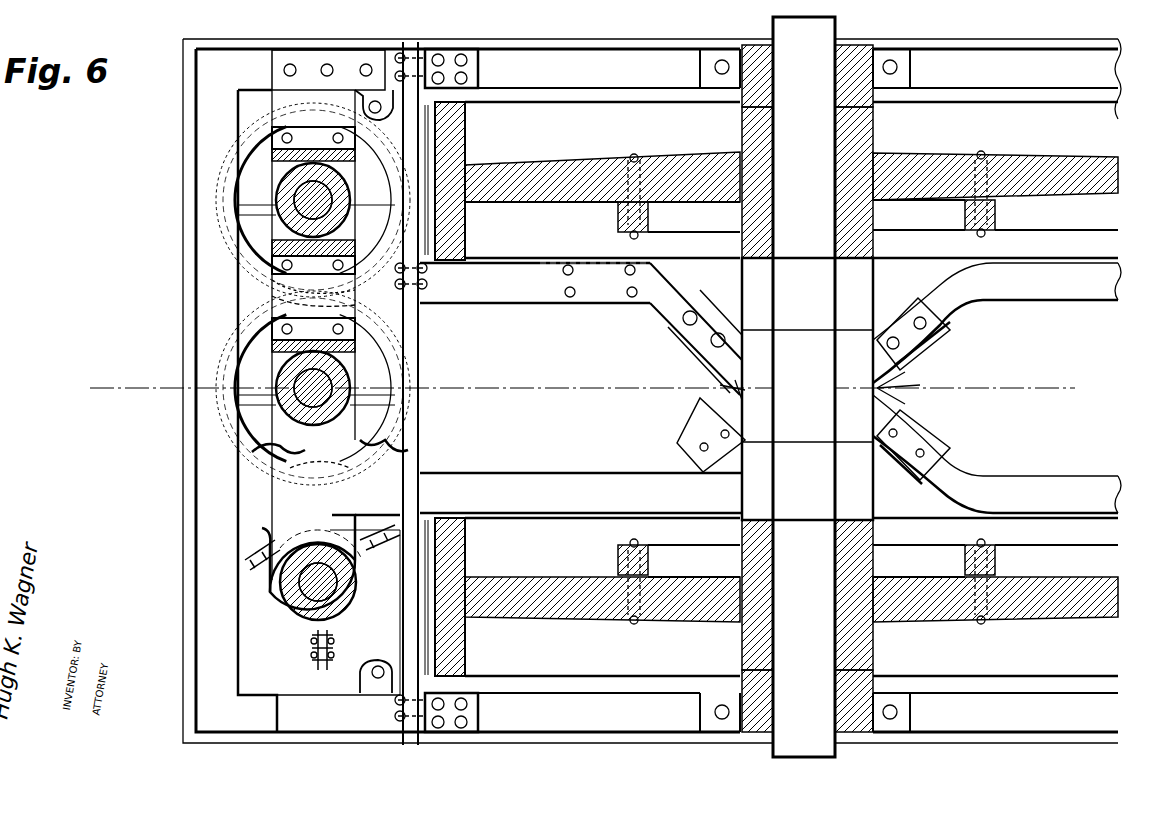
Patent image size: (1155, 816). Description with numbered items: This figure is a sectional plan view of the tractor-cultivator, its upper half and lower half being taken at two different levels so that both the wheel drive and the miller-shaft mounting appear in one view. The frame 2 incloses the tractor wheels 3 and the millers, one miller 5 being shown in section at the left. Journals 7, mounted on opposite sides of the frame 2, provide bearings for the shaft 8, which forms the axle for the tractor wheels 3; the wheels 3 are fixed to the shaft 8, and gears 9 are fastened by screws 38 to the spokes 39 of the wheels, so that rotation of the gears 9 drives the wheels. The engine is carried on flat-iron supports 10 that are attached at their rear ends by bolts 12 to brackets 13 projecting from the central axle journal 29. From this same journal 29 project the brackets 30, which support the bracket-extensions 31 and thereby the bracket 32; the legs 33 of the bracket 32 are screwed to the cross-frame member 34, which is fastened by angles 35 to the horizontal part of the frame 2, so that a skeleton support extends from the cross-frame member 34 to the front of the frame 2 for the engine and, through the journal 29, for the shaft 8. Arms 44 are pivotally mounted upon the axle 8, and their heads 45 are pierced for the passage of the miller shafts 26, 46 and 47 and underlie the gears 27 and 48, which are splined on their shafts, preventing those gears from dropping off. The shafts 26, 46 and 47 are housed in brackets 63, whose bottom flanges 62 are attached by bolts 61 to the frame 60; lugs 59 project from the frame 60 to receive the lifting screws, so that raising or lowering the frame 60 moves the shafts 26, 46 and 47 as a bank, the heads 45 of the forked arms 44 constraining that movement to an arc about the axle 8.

The frame 2 is at (798, 390).
The tractor wheels 3 is at (771, 389).
The miller 5 is at (290, 612).
The journals 7 is at (758, 48).
The shaft 8 is at (804, 387).
The gears 9 is at (950, 235).
The supports 10 is at (997, 388).
The bolts 12 is at (926, 323).
The brackets 13 is at (909, 384).
The shaft 26 is at (300, 405).
The gear 27 is at (237, 294).
The central axle journal 29 is at (807, 389).
The brackets 30 is at (745, 388).
The bracket-extensions 31 is at (672, 310).
The bracket 32 is at (535, 283).
The legs 33 is at (430, 290).
The cross-frame member 34 is at (420, 348).
The angles 35 is at (470, 48).
The screws 38 is at (636, 155).
The spokes 39 is at (542, 168).
The arms 44 is at (581, 493).
The heads 45 is at (262, 572).
The shaft 46 is at (300, 210).
The shaft 47 is at (290, 582).
The gear 48 is at (237, 126).
The lug 59 is at (378, 100).
The frame 60 is at (272, 97).
The bolts 61 is at (272, 153).
The flanges 62 is at (313, 233).
The brackets 63 is at (272, 178).